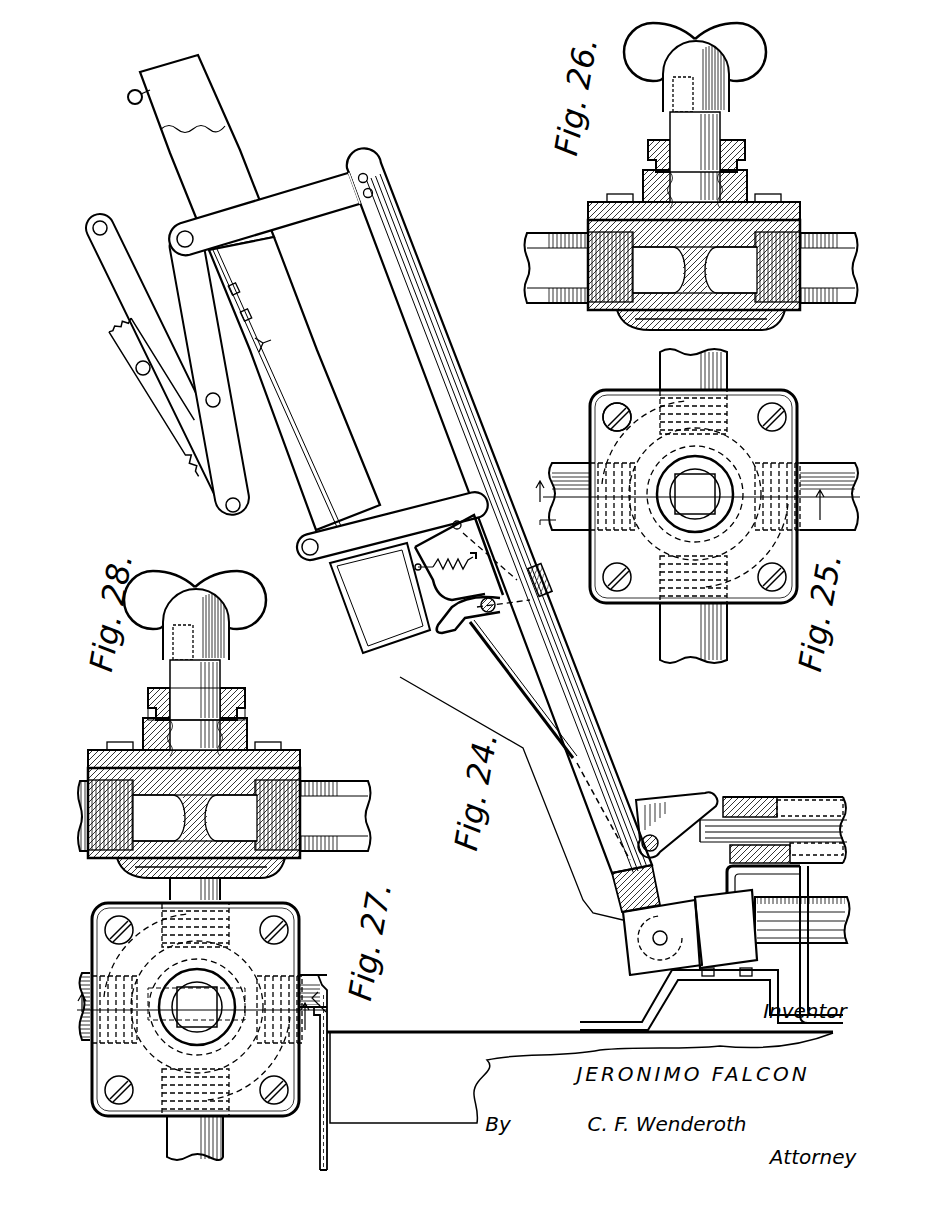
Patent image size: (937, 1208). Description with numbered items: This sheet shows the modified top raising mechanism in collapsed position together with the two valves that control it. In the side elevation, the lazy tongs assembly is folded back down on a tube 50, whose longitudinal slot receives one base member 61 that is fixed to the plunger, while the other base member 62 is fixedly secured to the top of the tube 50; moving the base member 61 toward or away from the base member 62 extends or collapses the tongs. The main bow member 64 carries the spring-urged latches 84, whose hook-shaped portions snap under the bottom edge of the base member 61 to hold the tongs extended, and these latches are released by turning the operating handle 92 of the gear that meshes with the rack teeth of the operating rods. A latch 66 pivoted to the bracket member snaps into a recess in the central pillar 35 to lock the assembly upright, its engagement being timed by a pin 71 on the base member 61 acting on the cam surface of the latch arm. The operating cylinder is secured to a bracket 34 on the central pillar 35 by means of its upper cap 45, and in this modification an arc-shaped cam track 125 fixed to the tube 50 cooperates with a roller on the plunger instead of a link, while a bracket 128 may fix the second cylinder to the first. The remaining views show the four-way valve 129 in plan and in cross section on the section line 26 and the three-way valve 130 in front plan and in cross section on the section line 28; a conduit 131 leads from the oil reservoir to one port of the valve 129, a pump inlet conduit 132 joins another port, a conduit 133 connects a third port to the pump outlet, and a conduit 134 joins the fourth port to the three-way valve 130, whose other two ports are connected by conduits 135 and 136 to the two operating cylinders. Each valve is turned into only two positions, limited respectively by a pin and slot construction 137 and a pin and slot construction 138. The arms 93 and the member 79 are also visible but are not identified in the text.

In FIG. 25, the section line 26 is at (665, 503).
In FIG. 27, the section line 26 is at (193, 1012).
In FIG. 24, the section line 28 is at (331, 1072).
In FIG. 27, the section line 28 is at (336, 999).
In FIG. 24, the bracket 34 is at (650, 1012).
In FIG. 24, the central pillar 35 is at (580, 1077).
In FIG. 24, the upper cap 45 is at (726, 929).
In FIG. 24, the tube 50 is at (412, 327).
In FIG. 24, the base member 61 is at (343, 530).
In FIG. 24, the base member 62 is at (292, 204).
In FIG. 24, the main bow member 64 is at (207, 152).
In FIG. 24, the latch 66 is at (437, 640).
In FIG. 24, the pin 71 is at (455, 521).
In FIG. 24, the pipe 79 is at (818, 945).
In FIG. 24, the latch 84 is at (319, 445).
In FIG. 24, the operating handle 92 is at (128, 95).
In FIG. 24, the lazy-tongs arms 93 is at (225, 485).
In FIG. 24, the arc-shaped cam track 125 is at (667, 808).
In FIG. 24, the bracket 128 is at (722, 886).
In FIG. 26, the four-way valve 129 is at (592, 205).
In FIG. 25, the four-way valve 129 is at (600, 600).
In FIG. 28, the three-way valve 130 is at (97, 748).
In FIG. 27, the three-way valve 130 is at (247, 1112).
In FIG. 26, the conduit 131 is at (524, 270).
In FIG. 25, the conduit 131 is at (597, 568).
In FIG. 25, the pump inlet conduit 132 is at (663, 635).
In FIG. 25, the conduit 133 is at (668, 372).
In FIG. 26, the conduit 134 is at (820, 235).
In FIG. 25, the conduit 134 is at (820, 460).
In FIG. 27, the conduit 134 is at (78, 1014).
In FIG. 27, the conduit 135 is at (170, 1133).
In FIG. 28, the conduit 136 is at (313, 780).
In FIG. 27, the conduit 136 is at (313, 968).
In FIG. 25, the pin and slot construction 137 is at (600, 410).
In FIG. 28, the pin and slot construction 138 is at (140, 738).
In FIG. 27, the pin and slot construction 138 is at (203, 956).